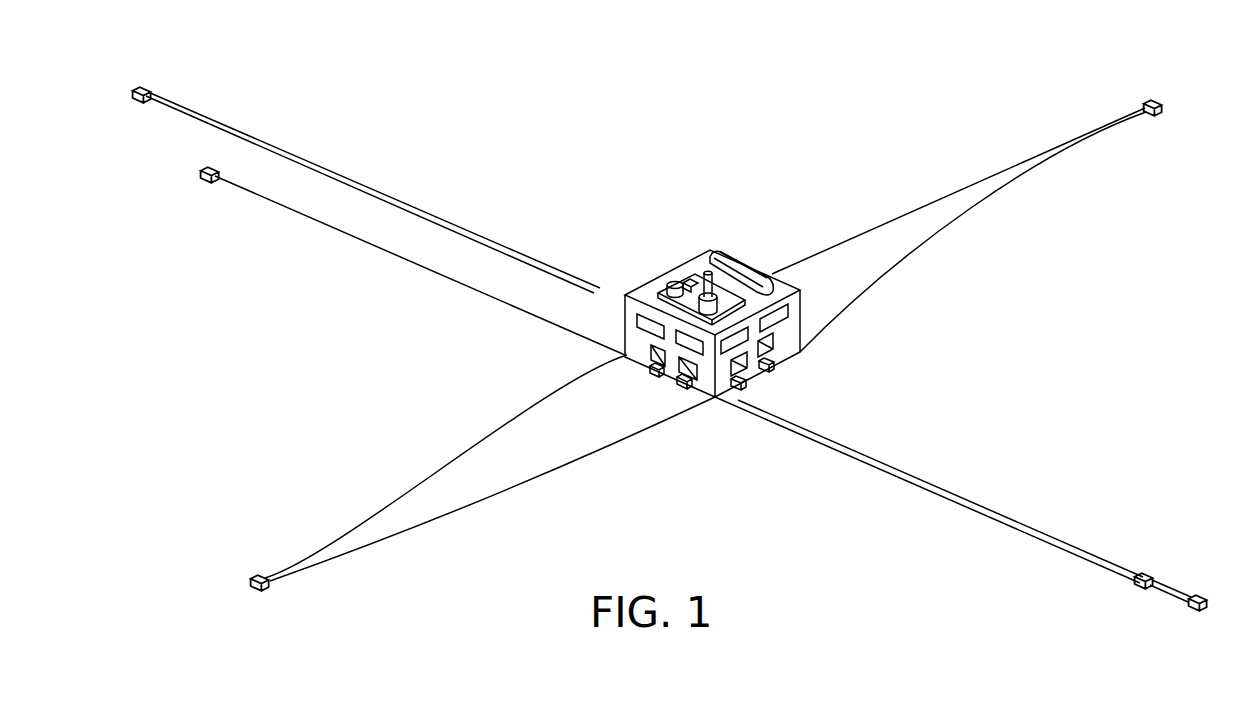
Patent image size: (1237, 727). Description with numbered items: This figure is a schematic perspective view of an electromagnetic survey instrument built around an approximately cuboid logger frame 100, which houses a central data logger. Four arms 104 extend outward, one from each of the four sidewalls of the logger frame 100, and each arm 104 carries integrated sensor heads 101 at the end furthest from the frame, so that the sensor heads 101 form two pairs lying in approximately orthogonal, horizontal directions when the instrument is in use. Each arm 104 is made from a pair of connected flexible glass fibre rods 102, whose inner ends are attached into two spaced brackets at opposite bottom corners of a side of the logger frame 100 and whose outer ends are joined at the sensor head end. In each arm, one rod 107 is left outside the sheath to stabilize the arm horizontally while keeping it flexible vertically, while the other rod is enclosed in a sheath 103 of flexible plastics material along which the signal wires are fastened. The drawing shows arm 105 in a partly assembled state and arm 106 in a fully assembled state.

The logger frame 100 is at (705, 249).
The sensor heads 101 is at (200, 180).
The flexible glass fibre rods 102 is at (485, 238).
The sheath 103 is at (418, 265).
The arms 104 is at (654, 337).
The arm in partly assembled state 105 is at (897, 476).
The arm in fully assembled state 106 is at (585, 459).
The rod not located within the sheath 107 is at (924, 205).